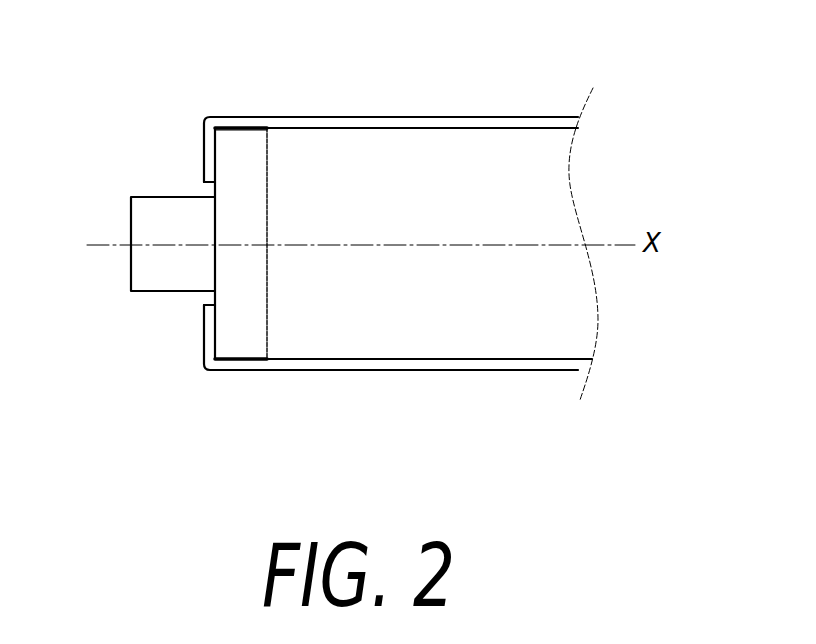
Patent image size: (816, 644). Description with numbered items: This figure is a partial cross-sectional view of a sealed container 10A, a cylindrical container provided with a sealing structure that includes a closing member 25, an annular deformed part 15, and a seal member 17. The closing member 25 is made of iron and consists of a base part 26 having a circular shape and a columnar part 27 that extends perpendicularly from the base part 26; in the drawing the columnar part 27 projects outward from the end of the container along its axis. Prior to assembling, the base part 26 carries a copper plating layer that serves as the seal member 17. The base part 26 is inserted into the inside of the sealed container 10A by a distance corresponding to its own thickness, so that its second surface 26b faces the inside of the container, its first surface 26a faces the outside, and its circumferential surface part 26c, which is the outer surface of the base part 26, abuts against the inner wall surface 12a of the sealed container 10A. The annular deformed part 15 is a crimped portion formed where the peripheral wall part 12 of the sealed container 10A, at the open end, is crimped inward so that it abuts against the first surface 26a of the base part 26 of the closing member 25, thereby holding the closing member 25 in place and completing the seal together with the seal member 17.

The sealed container 10A is at (368, 111).
The peripheral wall part 12 is at (302, 117).
The inner wall surface 12a is at (463, 127).
The annular deformed part 15 is at (204, 170).
The seal member 17 is at (237, 127).
The closing member 25 is at (240, 432).
The base part 26 is at (228, 333).
The first surface 26a is at (215, 190).
The second surface 26b is at (267, 193).
The circumferential surface part 26c is at (247, 162).
The columnar part 27 is at (160, 293).